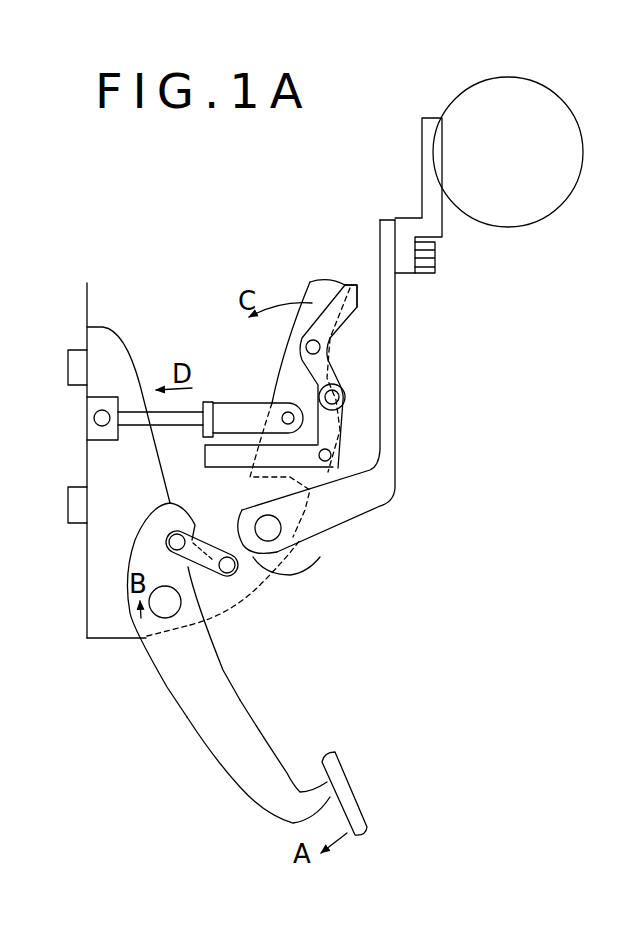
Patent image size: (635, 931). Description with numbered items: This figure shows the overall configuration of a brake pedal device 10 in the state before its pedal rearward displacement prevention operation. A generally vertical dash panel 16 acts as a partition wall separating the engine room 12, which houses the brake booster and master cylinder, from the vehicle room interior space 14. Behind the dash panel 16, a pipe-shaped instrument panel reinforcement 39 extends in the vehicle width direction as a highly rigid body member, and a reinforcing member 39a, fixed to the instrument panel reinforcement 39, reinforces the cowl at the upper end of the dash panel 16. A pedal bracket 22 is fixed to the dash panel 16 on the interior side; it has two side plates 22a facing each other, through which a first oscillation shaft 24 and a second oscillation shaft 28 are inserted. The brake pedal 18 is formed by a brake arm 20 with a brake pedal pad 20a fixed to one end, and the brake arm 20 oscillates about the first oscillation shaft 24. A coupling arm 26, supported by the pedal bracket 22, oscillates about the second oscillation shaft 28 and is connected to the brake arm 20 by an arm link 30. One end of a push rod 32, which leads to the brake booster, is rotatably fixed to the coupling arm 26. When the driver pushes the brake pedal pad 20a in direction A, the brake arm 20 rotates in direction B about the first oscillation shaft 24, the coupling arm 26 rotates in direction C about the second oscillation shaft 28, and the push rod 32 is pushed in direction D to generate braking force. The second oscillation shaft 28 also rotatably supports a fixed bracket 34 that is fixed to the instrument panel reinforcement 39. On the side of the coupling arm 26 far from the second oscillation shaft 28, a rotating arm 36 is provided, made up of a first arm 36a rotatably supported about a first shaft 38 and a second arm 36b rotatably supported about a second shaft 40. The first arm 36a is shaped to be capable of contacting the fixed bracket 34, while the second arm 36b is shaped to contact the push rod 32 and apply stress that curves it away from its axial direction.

The brake pedal device 10 is at (205, 284).
The engine room 12 is at (37, 597).
The vehicle room interior space 14 is at (208, 348).
The dash panel 16 is at (88, 310).
The brake pedal 18 is at (263, 730).
The brake arm 20 is at (200, 715).
The brake pedal pad 20a is at (360, 815).
The pedal bracket 22 is at (100, 628).
The side plates 22a is at (117, 628).
The first oscillation shaft 24 is at (163, 602).
The coupling arm 26 is at (310, 293).
The second oscillation shaft 28 is at (268, 530).
The arm link 30 is at (203, 537).
The push rod 32 is at (233, 399).
The fixed bracket 34 is at (370, 498).
The rotating arm 36 is at (354, 282).
The first arm 36a is at (345, 292).
The second arm 36b is at (332, 424).
The first shaft 38 is at (320, 345).
The instrument panel reinforcement 39 is at (493, 195).
The reinforcing member 39a is at (427, 213).
The second shaft 40 is at (327, 462).